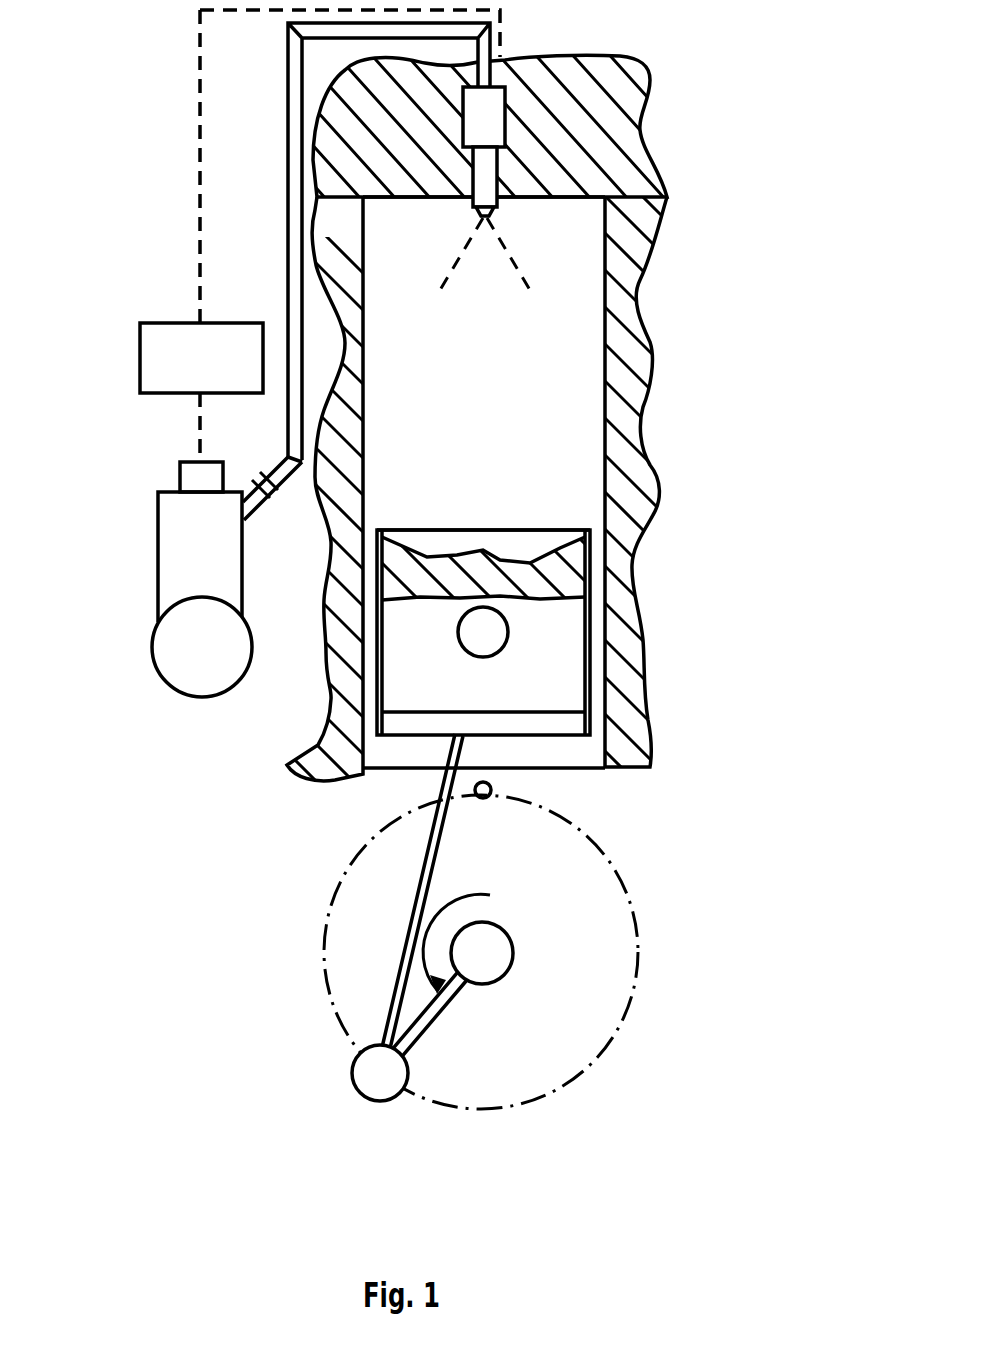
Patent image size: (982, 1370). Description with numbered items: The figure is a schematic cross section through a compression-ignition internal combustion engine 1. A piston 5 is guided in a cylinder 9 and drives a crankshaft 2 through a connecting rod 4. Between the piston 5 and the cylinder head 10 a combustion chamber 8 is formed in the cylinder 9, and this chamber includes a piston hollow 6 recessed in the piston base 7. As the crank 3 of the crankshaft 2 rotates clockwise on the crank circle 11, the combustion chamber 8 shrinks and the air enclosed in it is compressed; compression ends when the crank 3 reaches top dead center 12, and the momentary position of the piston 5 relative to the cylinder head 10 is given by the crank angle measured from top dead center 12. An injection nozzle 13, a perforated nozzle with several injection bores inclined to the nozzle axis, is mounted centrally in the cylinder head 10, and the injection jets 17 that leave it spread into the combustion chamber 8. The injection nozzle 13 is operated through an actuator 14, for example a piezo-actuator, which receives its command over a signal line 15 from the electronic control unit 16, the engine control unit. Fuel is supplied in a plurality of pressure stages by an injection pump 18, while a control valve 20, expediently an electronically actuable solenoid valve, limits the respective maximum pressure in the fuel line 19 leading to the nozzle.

The internal combustion engine 1 is at (708, 217).
The crankshaft 2 is at (497, 955).
The crank 3 is at (430, 1018).
The connecting rod 4 is at (397, 977).
The piston 5 is at (566, 688).
The piston hollow 6 is at (528, 548).
The piston base 7 is at (566, 536).
The combustion chamber 8 is at (575, 383).
The cylinder 9 is at (622, 292).
The cylinder head 10 is at (323, 137).
The crank circle 11 is at (633, 897).
The top dead center 12 is at (492, 790).
The injection nozzle 13 is at (485, 169).
The actuator 14 is at (470, 124).
The signal line 15 is at (203, 60).
The electronic control unit 16 is at (175, 337).
The injection jets 17 is at (403, 250).
The injection pump 18 is at (183, 565).
The fuel line 19 is at (297, 420).
The control valve 20 is at (190, 478).